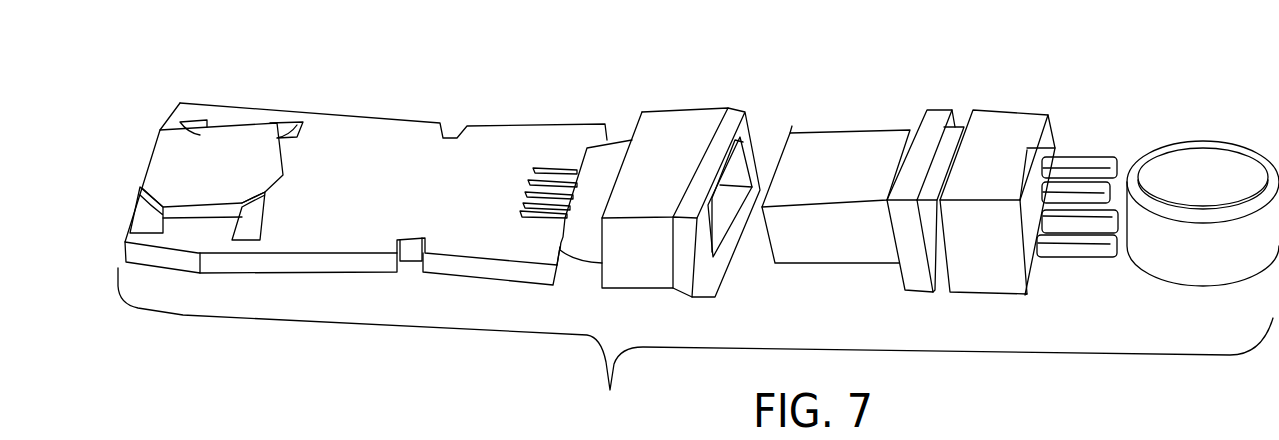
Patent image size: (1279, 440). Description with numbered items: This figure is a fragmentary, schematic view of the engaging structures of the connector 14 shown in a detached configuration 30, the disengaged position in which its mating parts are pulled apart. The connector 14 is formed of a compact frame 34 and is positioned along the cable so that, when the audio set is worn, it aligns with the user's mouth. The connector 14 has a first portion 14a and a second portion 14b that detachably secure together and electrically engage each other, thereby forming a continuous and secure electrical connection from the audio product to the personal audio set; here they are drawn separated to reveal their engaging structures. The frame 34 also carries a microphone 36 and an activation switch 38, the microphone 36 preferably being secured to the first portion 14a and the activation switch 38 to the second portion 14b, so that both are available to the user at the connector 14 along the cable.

The connector 14 is at (695, 344).
The first portion 14a is at (1023, 125).
The second portion 14b is at (690, 123).
The detached configuration 30 is at (778, 133).
The compact frame 34 is at (655, 127).
The microphone 36 is at (1183, 167).
The activation switch 38 is at (222, 167).